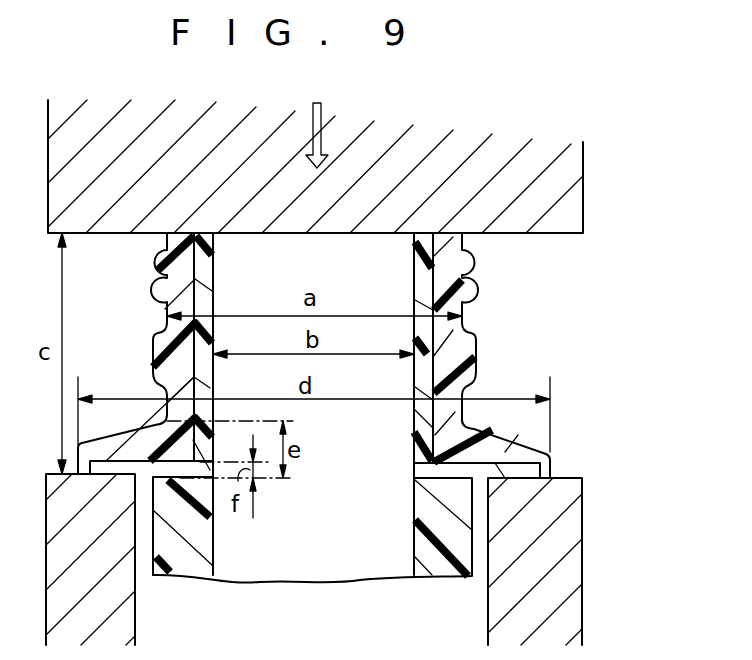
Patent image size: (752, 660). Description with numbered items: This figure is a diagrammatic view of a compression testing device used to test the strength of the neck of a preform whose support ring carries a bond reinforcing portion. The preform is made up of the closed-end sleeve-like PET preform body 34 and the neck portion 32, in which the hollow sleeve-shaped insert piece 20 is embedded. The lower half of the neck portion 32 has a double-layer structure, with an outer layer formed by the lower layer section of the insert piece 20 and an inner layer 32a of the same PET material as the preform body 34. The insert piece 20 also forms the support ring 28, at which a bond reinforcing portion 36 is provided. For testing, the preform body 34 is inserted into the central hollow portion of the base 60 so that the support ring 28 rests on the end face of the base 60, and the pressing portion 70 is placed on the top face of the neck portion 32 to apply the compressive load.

The pressing portion 70 is at (552, 187).
The base 60 is at (543, 603).
The insert piece 20 is at (480, 300).
The neck portion 32 is at (358, 408).
The inner layer 32a is at (413, 422).
The support ring 28 is at (507, 452).
The bond reinforcing portion 36 is at (552, 473).
The preform body 34 is at (450, 537).